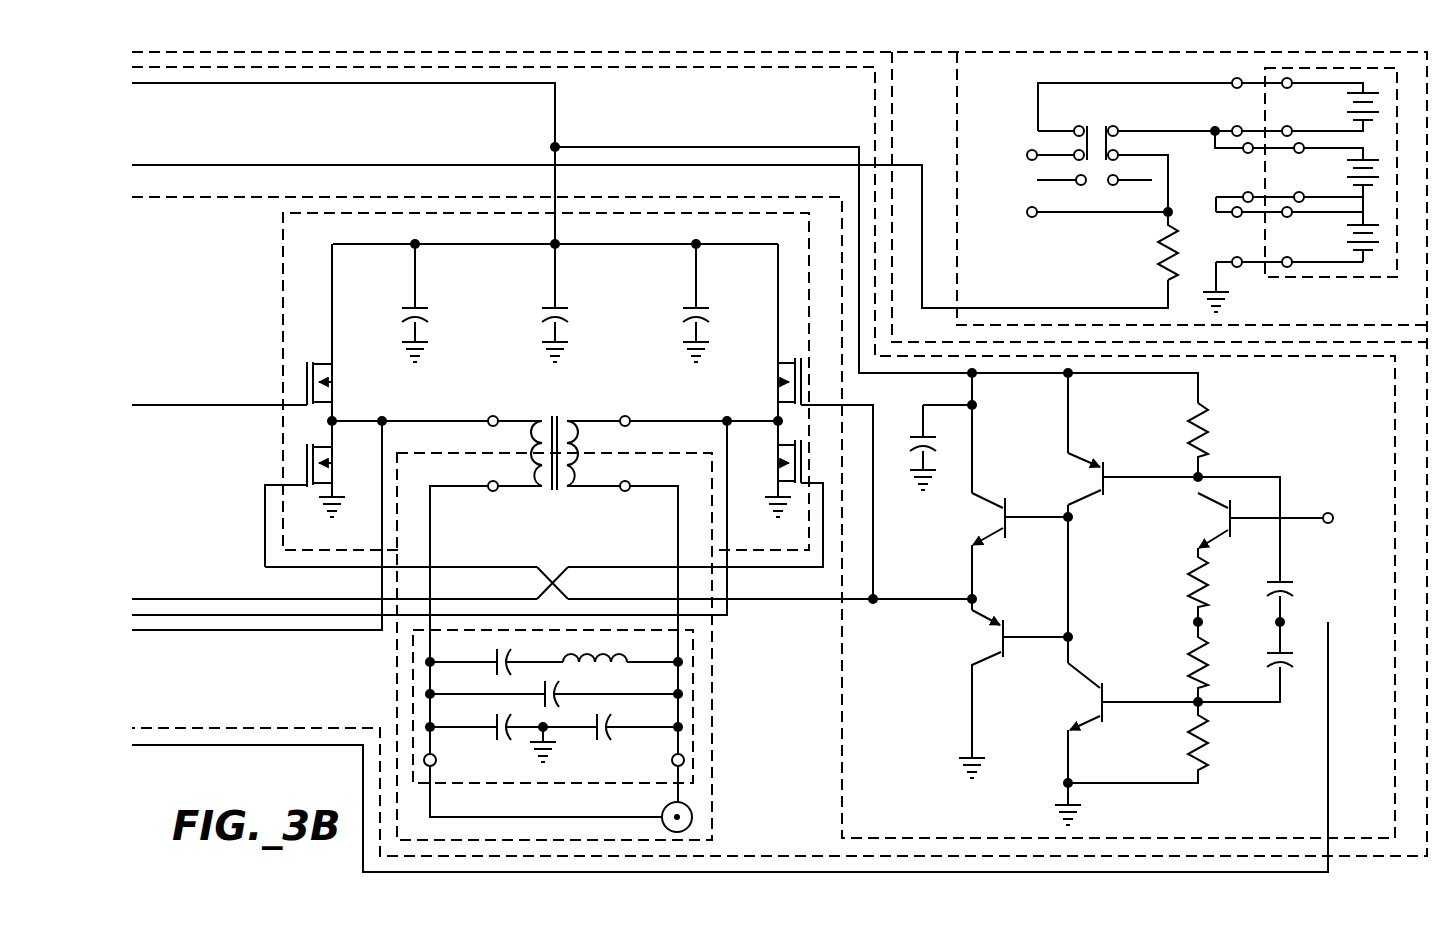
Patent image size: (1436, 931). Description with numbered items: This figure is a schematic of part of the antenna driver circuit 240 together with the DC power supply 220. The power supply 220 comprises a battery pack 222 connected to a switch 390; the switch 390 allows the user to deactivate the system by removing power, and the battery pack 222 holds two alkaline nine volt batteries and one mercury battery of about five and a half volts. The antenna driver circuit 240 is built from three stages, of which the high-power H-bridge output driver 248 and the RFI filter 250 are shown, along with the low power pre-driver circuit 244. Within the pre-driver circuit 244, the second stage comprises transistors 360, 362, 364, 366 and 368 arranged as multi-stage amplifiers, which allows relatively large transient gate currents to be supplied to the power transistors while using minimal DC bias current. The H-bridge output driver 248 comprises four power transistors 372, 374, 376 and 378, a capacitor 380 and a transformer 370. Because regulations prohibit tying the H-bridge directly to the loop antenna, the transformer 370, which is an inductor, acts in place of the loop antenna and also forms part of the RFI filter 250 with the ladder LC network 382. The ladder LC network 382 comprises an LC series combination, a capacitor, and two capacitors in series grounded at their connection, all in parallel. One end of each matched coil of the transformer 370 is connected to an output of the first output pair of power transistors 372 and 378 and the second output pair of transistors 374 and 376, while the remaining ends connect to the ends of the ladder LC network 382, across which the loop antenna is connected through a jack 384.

The DC power supply 220 is at (1163, 188).
The battery pack 222 is at (1365, 280).
The antenna driver circuit 240 is at (233, 729).
The pre-driver circuit 244 is at (226, 199).
The H-bridge output driver 248 is at (283, 276).
The RFI filter 250 is at (712, 712).
The transistor 360 is at (1216, 504).
The transistor 362 is at (1086, 492).
The transistor 364 is at (1086, 698).
The transistor 366 is at (986, 502).
The transistor 368 is at (986, 655).
The transformer 370 is at (556, 412).
The power transistor 372 is at (764, 463).
The power transistor 374 is at (342, 464).
The power transistor 376 is at (342, 380).
The power transistor 378 is at (766, 382).
The capacitor 380 is at (528, 317).
The ladder LC network 382 is at (705, 760).
The jack 384 is at (692, 822).
The switch 390 is at (1096, 118).